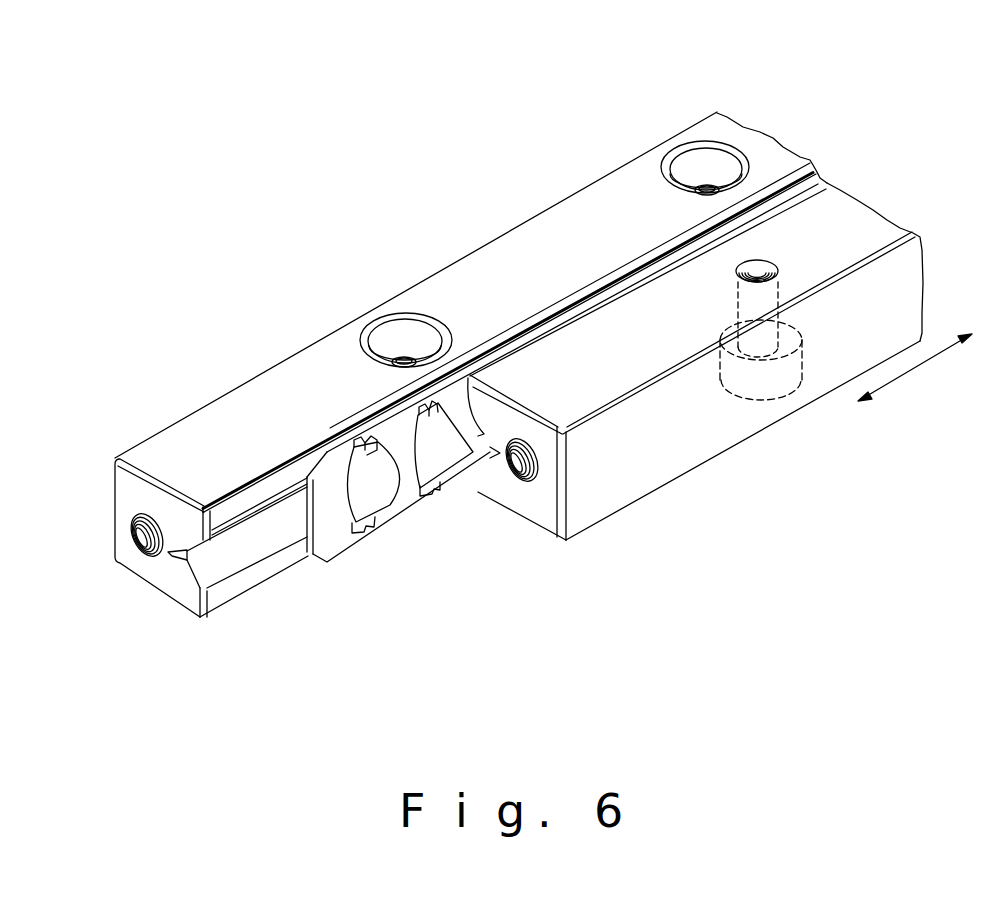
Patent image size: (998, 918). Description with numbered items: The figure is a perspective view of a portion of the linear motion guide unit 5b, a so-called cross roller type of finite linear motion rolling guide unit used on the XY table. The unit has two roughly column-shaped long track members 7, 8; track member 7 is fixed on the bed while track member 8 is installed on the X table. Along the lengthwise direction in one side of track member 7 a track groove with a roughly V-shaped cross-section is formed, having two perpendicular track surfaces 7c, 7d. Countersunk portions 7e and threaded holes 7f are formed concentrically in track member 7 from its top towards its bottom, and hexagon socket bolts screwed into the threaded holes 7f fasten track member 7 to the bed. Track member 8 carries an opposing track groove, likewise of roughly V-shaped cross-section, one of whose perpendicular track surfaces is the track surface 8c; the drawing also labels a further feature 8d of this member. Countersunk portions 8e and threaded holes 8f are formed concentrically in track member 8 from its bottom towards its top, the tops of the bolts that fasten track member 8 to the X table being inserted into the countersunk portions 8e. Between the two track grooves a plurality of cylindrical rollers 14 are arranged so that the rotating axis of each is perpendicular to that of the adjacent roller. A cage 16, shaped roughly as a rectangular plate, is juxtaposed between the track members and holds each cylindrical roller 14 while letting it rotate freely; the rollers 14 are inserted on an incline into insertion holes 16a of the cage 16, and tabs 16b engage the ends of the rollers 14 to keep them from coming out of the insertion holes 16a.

The linear motion guide unit 5b is at (145, 192).
The track member 7 is at (567, 196).
The track surface 7c is at (212, 598).
The track surface 7d is at (240, 555).
The countersunk portion 7e is at (387, 327).
The threaded hole 7f is at (412, 362).
The track member 8 is at (766, 431).
The track surface 8c is at (474, 382).
The lower edge of slider 8d is at (480, 452).
The countersunk portion 8e is at (790, 378).
The threaded hole 8f is at (762, 266).
The cylindrical roller 14 is at (385, 490).
The cage 16 is at (330, 566).
The insertion hole 16a is at (330, 447).
The tab 16b is at (327, 446).